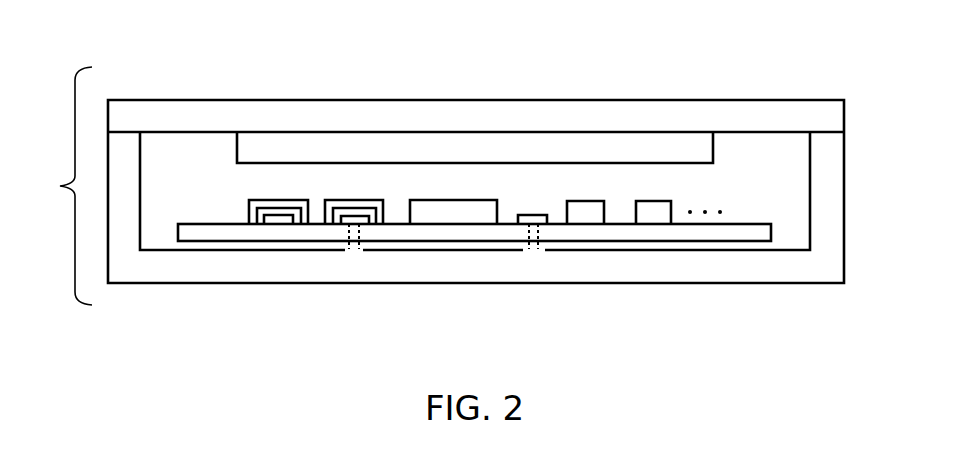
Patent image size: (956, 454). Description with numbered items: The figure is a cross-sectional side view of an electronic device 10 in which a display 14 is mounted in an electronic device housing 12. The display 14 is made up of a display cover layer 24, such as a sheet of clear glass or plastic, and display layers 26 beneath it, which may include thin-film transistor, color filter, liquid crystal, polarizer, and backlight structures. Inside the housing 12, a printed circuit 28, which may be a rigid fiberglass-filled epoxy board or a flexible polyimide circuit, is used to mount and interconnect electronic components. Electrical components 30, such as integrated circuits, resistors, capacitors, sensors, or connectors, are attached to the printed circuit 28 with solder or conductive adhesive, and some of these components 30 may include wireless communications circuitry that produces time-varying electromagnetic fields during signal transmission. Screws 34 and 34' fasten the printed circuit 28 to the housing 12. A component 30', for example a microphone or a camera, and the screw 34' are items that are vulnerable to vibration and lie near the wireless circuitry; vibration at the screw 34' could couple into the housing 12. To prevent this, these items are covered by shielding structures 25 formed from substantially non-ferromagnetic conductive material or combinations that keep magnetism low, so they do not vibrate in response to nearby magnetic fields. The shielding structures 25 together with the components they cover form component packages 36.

The electronic device 10 is at (62, 186).
The electronic device housing 12 is at (833, 185).
The display 14 is at (518, 58).
The display cover layer 24 is at (173, 112).
The display layers 26 is at (305, 140).
The printed circuit 28 is at (745, 224).
The shielding structures 25 is at (248, 208).
The components 30 is at (553, 198).
The component 30' is at (270, 272).
The screw 34 is at (527, 272).
The screw 34' is at (348, 272).
The component packages 36 is at (278, 190).